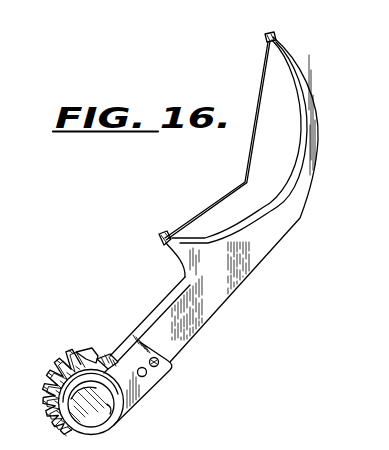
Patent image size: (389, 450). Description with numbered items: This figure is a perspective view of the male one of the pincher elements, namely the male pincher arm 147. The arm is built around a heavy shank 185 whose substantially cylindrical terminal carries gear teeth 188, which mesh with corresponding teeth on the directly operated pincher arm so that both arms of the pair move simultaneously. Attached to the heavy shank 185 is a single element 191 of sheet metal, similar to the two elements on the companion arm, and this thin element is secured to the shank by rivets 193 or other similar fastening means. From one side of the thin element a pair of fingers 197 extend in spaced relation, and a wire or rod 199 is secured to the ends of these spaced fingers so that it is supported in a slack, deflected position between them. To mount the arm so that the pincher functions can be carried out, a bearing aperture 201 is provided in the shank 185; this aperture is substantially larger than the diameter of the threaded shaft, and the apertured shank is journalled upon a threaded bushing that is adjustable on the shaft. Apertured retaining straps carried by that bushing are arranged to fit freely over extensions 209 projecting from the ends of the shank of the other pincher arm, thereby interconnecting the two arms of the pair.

The male pincher arm 147 is at (123, 316).
The heavy shank 185 is at (152, 394).
The gear teeth 188 is at (58, 356).
The single element of sheet metal 191 is at (226, 296).
The rivets 193 is at (160, 361).
The fingers 197 is at (305, 79).
The wire or rod 199 is at (219, 200).
The bearing aperture 201 is at (106, 417).
The extensions 209 is at (63, 377).